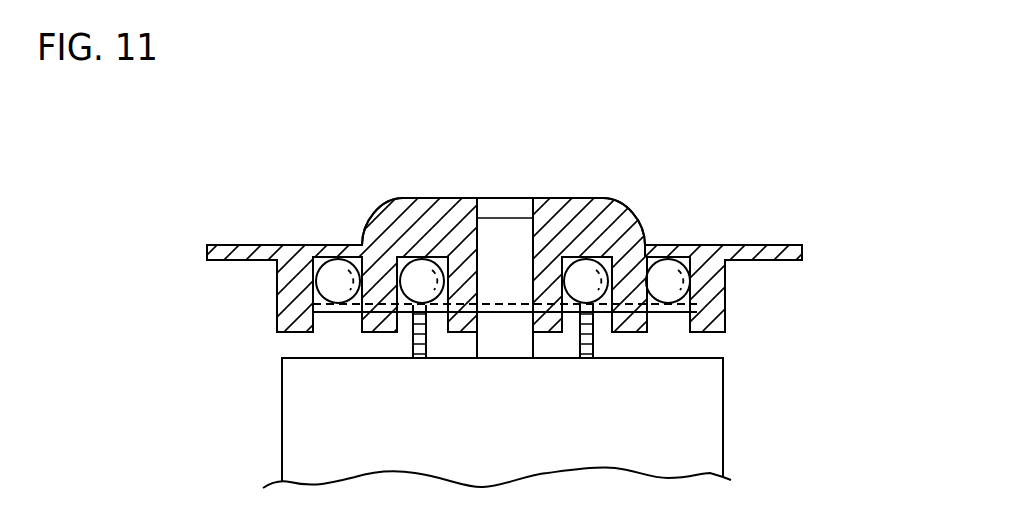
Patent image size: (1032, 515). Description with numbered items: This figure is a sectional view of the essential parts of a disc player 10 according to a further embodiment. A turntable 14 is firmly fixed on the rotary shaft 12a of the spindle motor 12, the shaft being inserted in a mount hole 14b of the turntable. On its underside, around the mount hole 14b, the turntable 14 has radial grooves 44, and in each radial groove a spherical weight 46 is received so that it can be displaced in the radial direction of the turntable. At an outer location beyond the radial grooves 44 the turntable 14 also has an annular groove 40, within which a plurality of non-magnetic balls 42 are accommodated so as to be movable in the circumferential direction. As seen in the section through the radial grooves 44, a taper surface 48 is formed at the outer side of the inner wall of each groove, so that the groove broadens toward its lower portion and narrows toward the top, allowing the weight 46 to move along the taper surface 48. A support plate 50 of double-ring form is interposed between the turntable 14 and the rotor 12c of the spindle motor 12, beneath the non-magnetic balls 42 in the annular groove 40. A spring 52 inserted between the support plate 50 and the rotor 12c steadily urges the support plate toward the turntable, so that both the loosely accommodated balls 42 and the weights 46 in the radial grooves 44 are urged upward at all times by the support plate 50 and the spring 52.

The spindle motor / bearing unit 10 is at (182, 152).
The spindle motor 12 is at (710, 353).
The rotary shaft 12a is at (497, 243).
The rotor 12c is at (708, 419).
The turntable 14 is at (702, 243).
The mount hole 14b is at (524, 209).
The annular groove 40 is at (313, 263).
The non-magnetic balls 42 is at (310, 287).
The radial grooves 44 is at (388, 204).
The spherical weights 46 is at (410, 316).
The taper surface 48 is at (367, 239).
The support plate 50 is at (325, 322).
The spring 52 is at (598, 333).